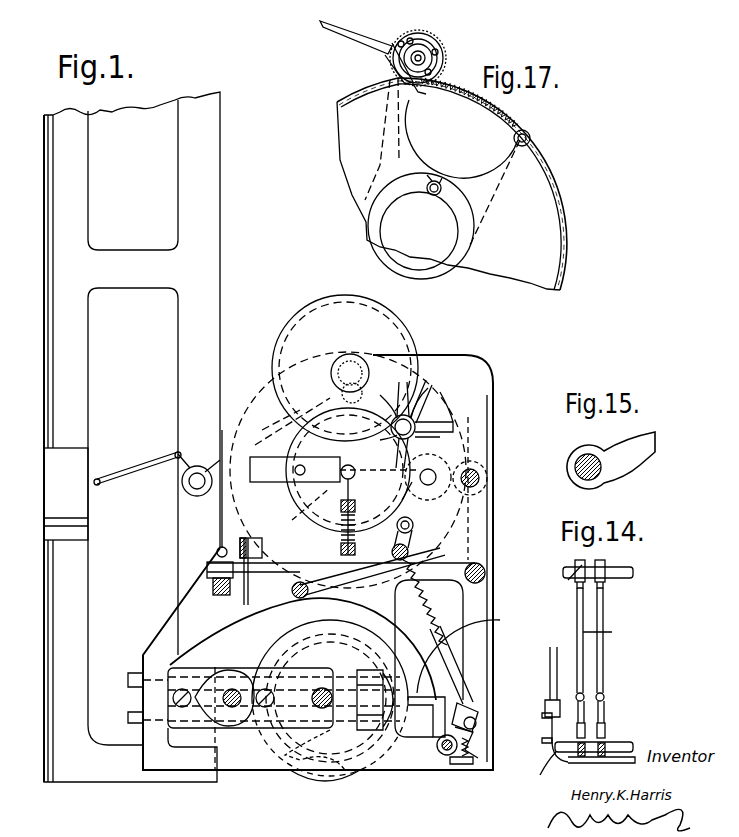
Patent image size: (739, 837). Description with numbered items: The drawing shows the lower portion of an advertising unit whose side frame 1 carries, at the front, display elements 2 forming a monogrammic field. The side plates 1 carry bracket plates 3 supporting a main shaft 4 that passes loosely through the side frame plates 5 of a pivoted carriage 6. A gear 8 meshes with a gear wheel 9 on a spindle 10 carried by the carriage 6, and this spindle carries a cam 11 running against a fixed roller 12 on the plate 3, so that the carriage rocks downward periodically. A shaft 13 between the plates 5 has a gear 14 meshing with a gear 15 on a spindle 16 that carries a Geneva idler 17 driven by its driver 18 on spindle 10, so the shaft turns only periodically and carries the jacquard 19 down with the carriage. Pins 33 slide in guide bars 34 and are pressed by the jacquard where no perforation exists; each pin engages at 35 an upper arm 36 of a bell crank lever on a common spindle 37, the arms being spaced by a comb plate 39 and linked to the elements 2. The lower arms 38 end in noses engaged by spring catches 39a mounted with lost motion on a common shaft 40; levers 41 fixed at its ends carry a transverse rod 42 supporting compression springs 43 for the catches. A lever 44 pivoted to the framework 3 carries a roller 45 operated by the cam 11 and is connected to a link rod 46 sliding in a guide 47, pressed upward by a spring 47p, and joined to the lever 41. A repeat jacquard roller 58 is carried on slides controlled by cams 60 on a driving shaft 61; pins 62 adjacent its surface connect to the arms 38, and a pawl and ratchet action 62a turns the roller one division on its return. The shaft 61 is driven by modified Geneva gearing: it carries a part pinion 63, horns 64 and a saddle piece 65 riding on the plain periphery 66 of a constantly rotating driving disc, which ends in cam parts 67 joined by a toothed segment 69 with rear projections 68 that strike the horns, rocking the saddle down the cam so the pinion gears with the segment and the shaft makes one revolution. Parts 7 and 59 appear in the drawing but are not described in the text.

In FIG. 1, the side frame 1 is at (60, 322).
In FIG. 1, the elements 2 is at (56, 472).
In FIG. 1, the bracket plates 3 is at (495, 412).
In FIG. 1, the main shaft 4 is at (480, 478).
In FIG. 1, the side frame plates 5 is at (420, 345).
In FIG. 1, the pivoted carriage 6 is at (262, 458).
In FIG. 1, the gear 7 is at (458, 462).
In FIG. 1, the gear 8 is at (444, 494).
In FIG. 1, the gear wheel 9 is at (298, 518).
In FIG. 1, the spindle 10 is at (342, 476).
In FIG. 1, the cam 11 is at (272, 437).
In FIG. 1, the fixed roller 12 is at (308, 398).
In FIG. 1, the shaft 13 is at (337, 373).
In FIG. 1, the gear 14 is at (330, 368).
In FIG. 1, the gear 15 is at (413, 417).
In FIG. 1, the spindle 16 is at (440, 413).
In FIG. 1, the Geneva idler 17 is at (450, 422).
In FIG. 1, the driver 18 is at (258, 480).
In FIG. 1, the jacquard 19 is at (300, 308).
In FIG. 1, the pins 33 is at (341, 508).
In FIG. 1, the guide bars 34 is at (341, 549).
In FIG. 1, the engagement point 35 is at (322, 624).
In FIG. 1, the upper arms 36 is at (430, 563).
In FIG. 14, the upper arms 36 is at (576, 582).
In FIG. 1, the common spindle 37 is at (487, 573).
In FIG. 14, the common spindle 37 is at (616, 580).
In FIG. 1, the arms 38 is at (476, 632).
In FIG. 14, the arms 38 is at (606, 640).
In FIG. 1, the comb plate 39 is at (242, 595).
In FIG. 1, the spring catch 39a is at (470, 738).
In FIG. 15, the spring catch 39a is at (624, 453).
In FIG. 14, the spring catch 39a is at (586, 722).
In FIG. 1, the common shaft 40 is at (437, 746).
In FIG. 15, the common shaft 40 is at (596, 477).
In FIG. 14, the common shaft 40 is at (618, 742).
In FIG. 1, the levers 41 is at (448, 732).
In FIG. 14, the levers 41 is at (545, 765).
In FIG. 1, the transverse rod 42 is at (455, 768).
In FIG. 14, the transverse rod 42 is at (625, 763).
In FIG. 1, the compression springs 43 is at (472, 752).
In FIG. 14, the compression springs 43 is at (580, 752).
In FIG. 1, the lever 44 is at (292, 587).
In FIG. 1, the roller 45 is at (412, 492).
In FIG. 1, the link rod 46 is at (438, 657).
In FIG. 14, the link rod 46 is at (550, 678).
In FIG. 1, the guide 47 is at (428, 630).
In FIG. 1, the spring 47p is at (432, 578).
In FIG. 1, the jacquard roller 58 is at (266, 668).
In FIG. 1, the plate 59 is at (224, 728).
In FIG. 1, the cams 60 is at (220, 684).
In FIG. 1, the driving shaft 61 is at (232, 688).
In FIG. 17, the driving shaft 61 is at (428, 58).
In FIG. 1, the pins 62 is at (500, 622).
In FIG. 1, the pawl and ratchet action 62a is at (327, 763).
In FIG. 17, the part pinion 63 is at (436, 42).
In FIG. 17, the horns 64 is at (345, 30).
In FIG. 17, the saddle piece 65 is at (396, 46).
In FIG. 17, the plain periphery 66 is at (560, 232).
In FIG. 17, the cam parts 67 is at (396, 75).
In FIG. 17, the projections 68 is at (415, 94).
In FIG. 17, the toothed segment 69 is at (518, 128).